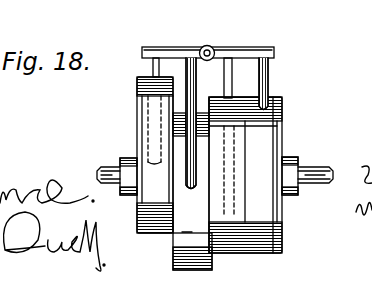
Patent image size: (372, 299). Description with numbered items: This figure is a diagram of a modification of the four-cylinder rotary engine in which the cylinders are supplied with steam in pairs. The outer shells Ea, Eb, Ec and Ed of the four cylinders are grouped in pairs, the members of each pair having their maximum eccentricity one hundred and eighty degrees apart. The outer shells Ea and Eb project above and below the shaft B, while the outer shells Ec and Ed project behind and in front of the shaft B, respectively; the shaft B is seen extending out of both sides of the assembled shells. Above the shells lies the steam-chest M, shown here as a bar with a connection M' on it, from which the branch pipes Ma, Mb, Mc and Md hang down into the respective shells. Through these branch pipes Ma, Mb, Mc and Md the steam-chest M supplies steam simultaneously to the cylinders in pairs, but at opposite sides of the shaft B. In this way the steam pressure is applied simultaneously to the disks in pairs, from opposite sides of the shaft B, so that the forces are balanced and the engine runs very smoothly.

The steam-chest M is at (187, 34).
The pivot ring M' is at (217, 32).
The branch pipe Ma is at (153, 67).
The branch pipe Mb is at (187, 58).
The branch pipe Mc is at (233, 62).
The branch pipe Md is at (268, 78).
The outer shell Ea is at (140, 217).
The outer shell Eb is at (192, 233).
The outer shell Ec is at (238, 168).
The outer shell Ed is at (261, 197).
The shaft B is at (104, 168).